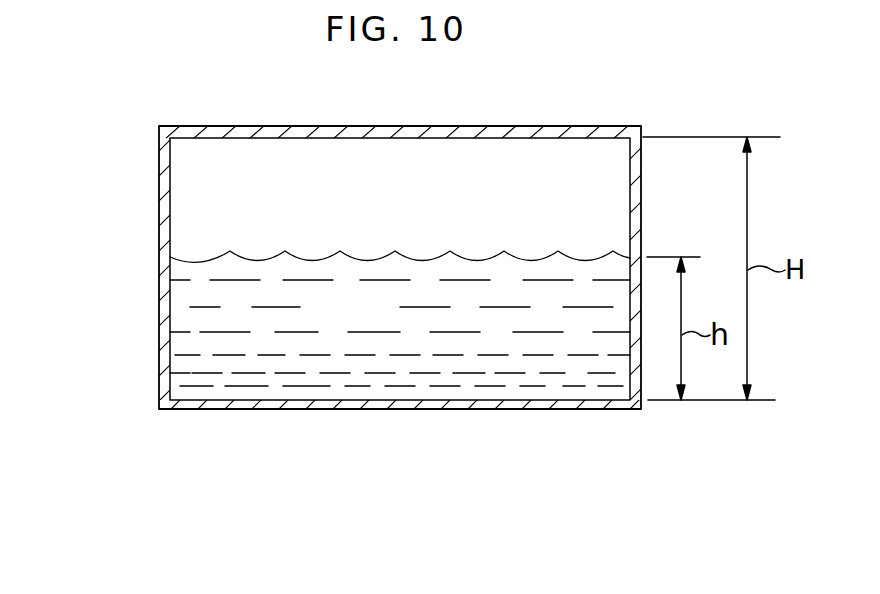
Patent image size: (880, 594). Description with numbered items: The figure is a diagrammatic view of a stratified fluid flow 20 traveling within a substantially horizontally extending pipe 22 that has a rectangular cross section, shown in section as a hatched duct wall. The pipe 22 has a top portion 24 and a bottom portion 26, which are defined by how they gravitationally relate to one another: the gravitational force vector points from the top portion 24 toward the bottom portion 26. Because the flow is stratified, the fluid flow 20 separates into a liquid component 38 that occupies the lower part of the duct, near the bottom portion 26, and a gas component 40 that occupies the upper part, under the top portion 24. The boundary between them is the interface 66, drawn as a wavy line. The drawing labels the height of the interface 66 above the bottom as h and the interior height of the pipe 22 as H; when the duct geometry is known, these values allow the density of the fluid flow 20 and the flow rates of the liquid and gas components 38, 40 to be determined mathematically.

The stratified fluid flow 20 is at (474, 166).
The pipe 22 is at (552, 126).
The top portion 24 is at (216, 147).
The bottom portion 26 is at (266, 398).
The liquid component 38 is at (192, 320).
The gas component 40 is at (183, 208).
The interface 66 is at (206, 261).